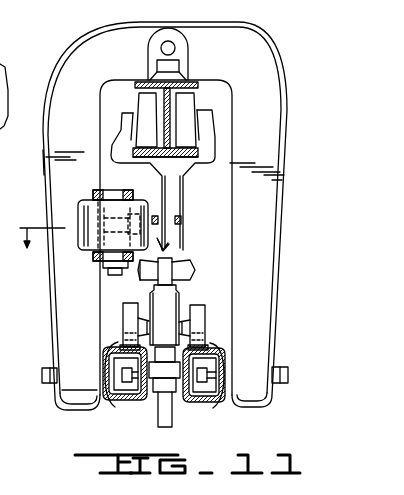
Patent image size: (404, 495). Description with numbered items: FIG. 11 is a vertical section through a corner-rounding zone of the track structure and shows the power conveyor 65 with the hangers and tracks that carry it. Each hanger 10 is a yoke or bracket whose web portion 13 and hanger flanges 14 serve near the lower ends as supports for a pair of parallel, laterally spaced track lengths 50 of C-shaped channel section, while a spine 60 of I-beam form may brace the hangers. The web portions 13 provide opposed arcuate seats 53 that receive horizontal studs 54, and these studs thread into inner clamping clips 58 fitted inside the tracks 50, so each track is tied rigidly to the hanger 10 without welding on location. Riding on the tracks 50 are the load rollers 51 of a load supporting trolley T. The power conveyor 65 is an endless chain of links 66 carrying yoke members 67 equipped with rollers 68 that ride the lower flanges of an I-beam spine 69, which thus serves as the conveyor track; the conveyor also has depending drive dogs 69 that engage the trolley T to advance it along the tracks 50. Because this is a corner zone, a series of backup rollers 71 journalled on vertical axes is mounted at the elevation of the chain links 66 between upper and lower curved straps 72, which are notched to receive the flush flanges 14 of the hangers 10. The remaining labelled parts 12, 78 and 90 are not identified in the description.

The hanger 10 is at (288, 183).
The solenoid assembly 12 is at (76, 219).
The web portion 13 is at (58, 148).
The hanger flange 14 is at (98, 142).
The track length 50 is at (138, 401).
The load roller 51 is at (200, 322).
The arcuate seat 53 is at (82, 378).
The stud 54 is at (45, 376).
The clamping clip 58 is at (125, 396).
The I-beam spine 60 is at (150, 160).
The power conveyor 65 is at (183, 250).
The chain link 66 is at (181, 221).
The yoke member 67 is at (215, 157).
The roller 68 is at (190, 103).
The I-beam spine 69 is at (152, 268).
The backup roller 71 is at (0, 141).
The strap 72 is at (93, 194).
The plunger 78 is at (100, 256).
The block 90 is at (168, 270).
The load supporting trolley T is at (191, 296).